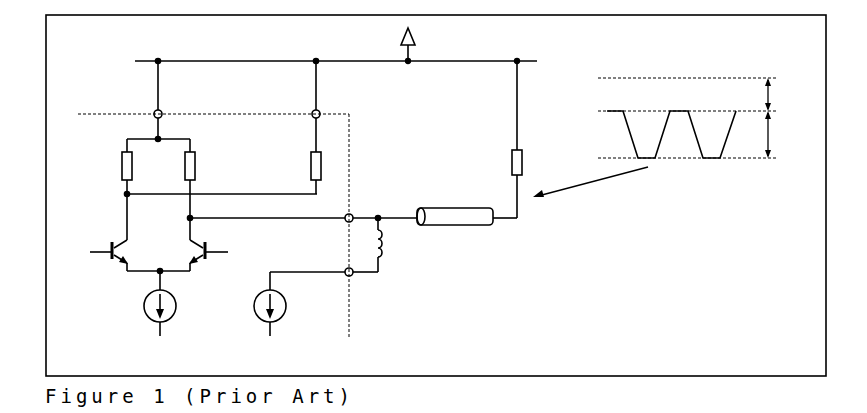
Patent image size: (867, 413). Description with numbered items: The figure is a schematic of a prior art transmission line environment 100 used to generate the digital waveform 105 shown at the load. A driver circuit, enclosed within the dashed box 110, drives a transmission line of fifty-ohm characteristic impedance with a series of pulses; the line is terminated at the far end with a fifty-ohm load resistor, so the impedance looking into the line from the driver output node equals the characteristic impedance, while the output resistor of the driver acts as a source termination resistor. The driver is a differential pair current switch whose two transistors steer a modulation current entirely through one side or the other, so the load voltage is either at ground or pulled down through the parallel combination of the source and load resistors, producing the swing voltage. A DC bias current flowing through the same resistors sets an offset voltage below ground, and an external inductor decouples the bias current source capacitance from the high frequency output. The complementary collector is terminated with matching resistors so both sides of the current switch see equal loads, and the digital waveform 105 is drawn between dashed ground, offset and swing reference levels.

The transmission line environment 100 is at (538, 294).
The digital waveform 105 is at (703, 206).
The dashed box 110 is at (350, 147).